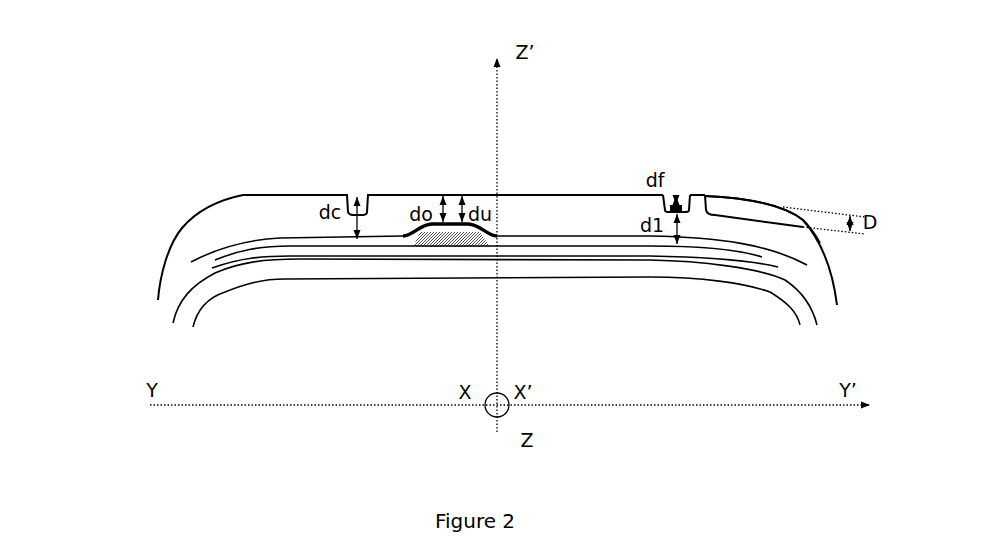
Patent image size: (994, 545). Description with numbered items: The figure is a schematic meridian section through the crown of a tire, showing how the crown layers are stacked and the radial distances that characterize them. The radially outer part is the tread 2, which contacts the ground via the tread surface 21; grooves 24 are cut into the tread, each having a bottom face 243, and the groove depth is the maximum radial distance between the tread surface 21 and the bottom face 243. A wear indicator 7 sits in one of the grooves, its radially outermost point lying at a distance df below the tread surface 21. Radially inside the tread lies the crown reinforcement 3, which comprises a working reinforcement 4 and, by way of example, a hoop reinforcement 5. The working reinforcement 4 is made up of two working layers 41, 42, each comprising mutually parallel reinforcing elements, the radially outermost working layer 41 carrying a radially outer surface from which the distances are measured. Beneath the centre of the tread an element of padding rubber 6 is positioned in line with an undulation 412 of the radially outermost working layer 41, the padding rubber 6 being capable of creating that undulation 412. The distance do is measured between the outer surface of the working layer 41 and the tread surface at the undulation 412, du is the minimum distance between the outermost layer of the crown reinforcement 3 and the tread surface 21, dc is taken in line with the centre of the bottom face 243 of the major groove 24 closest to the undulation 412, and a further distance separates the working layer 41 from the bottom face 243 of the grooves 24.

The tread 2 is at (499, 208).
The tread surface 21 is at (568, 193).
The wear indicator 7 is at (683, 205).
The bottom face 243 is at (733, 213).
The groove 24 is at (768, 208).
The undulation 412 is at (453, 222).
The element of padding rubber 6 is at (450, 245).
The crown reinforcement 3 is at (427, 268).
The hoop reinforcement 5 is at (190, 255).
The working reinforcement 4 is at (427, 281).
The radially outermost working layer 41 is at (227, 255).
The working layer 42 is at (212, 267).